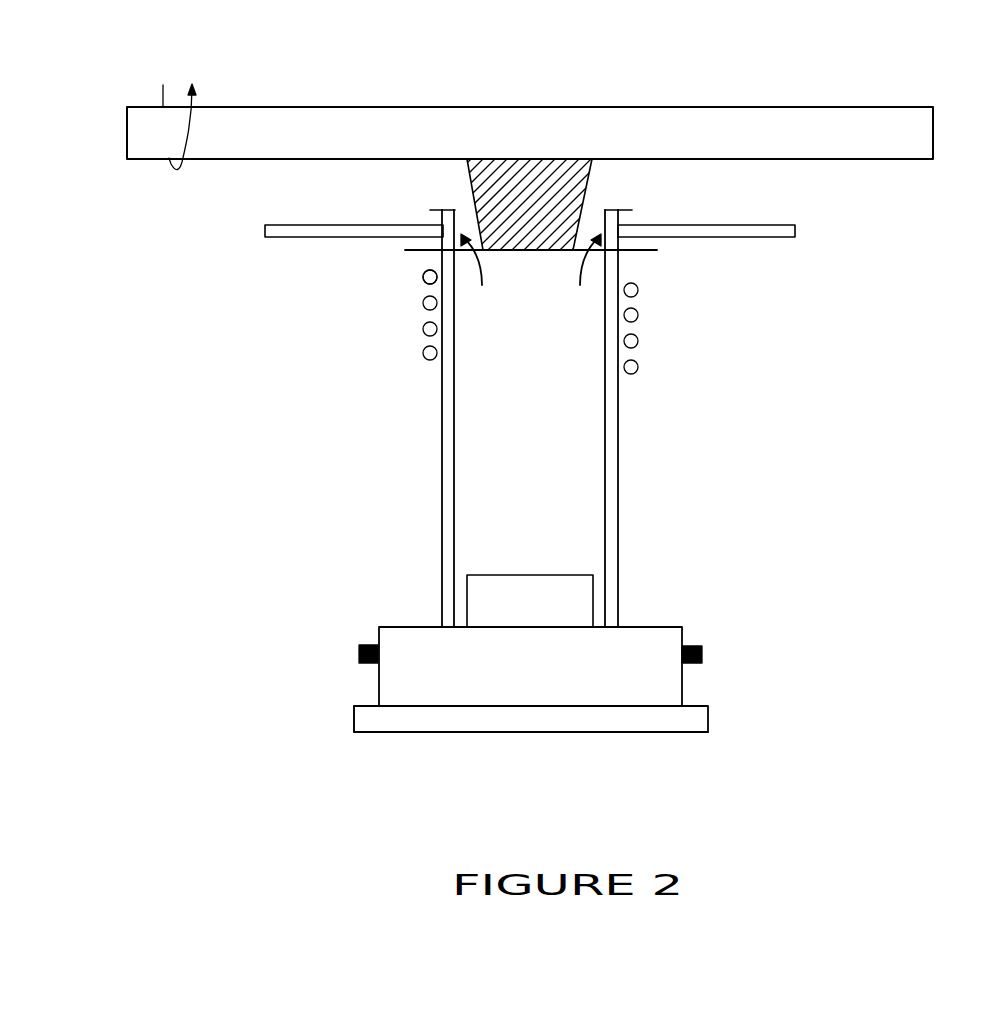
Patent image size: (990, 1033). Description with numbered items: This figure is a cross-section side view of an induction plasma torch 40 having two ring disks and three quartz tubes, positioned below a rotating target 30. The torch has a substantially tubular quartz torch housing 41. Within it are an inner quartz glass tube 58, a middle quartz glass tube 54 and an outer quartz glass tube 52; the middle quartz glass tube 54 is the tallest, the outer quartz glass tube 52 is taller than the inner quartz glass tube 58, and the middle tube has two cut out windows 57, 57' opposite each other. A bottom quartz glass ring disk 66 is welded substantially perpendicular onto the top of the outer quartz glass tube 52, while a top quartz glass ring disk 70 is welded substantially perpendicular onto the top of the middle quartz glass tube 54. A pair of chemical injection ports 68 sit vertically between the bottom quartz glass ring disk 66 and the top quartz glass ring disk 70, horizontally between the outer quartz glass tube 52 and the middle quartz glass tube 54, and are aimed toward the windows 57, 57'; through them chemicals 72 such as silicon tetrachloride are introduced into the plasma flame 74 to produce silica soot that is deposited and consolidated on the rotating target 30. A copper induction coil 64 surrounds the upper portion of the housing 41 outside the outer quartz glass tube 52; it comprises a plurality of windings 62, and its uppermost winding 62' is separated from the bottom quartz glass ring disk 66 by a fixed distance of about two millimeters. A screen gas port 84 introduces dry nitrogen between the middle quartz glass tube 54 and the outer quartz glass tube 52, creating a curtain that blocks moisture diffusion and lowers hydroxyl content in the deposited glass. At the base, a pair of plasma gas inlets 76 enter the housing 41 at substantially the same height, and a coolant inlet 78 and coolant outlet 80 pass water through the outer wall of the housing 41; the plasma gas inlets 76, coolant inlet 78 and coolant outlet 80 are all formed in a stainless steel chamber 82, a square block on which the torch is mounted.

The rotating target 30 is at (530, 114).
The plasma flame 74 is at (660, 149).
The top quartz glass ring disk 70 is at (604, 196).
The chemical injection ports 68 is at (501, 254).
The chemicals 72 is at (265, 229).
The bottom quartz glass ring disk 66 is at (400, 277).
The outer quartz glass tube 52 is at (442, 497).
The middle quartz glass tube 54 is at (455, 513).
The torch housing 41 is at (428, 438).
The induction plasma torch 40 is at (748, 406).
The cut out windows 57 is at (481, 277).
The cut out window 57' is at (581, 277).
The windings 62 is at (265, 318).
The uppermost winding 62' is at (384, 303).
The induction coil 64 is at (666, 322).
The inner quartz glass tube 58 is at (593, 601).
The screen gas port 84 is at (438, 608).
The plasma gas inlets 76 is at (359, 653).
The coolant inlet 78 is at (708, 718).
The coolant outlet 80 is at (354, 717).
The chamber 82 is at (632, 732).